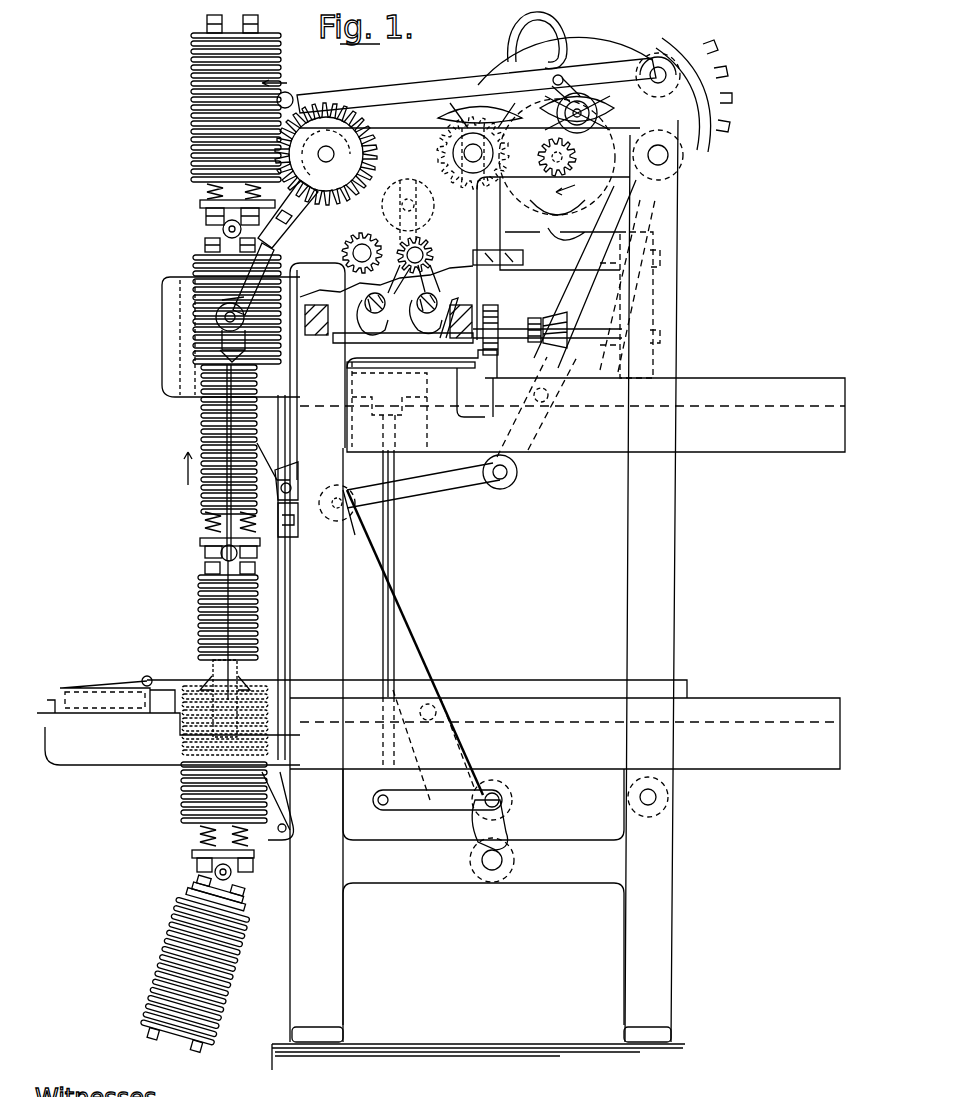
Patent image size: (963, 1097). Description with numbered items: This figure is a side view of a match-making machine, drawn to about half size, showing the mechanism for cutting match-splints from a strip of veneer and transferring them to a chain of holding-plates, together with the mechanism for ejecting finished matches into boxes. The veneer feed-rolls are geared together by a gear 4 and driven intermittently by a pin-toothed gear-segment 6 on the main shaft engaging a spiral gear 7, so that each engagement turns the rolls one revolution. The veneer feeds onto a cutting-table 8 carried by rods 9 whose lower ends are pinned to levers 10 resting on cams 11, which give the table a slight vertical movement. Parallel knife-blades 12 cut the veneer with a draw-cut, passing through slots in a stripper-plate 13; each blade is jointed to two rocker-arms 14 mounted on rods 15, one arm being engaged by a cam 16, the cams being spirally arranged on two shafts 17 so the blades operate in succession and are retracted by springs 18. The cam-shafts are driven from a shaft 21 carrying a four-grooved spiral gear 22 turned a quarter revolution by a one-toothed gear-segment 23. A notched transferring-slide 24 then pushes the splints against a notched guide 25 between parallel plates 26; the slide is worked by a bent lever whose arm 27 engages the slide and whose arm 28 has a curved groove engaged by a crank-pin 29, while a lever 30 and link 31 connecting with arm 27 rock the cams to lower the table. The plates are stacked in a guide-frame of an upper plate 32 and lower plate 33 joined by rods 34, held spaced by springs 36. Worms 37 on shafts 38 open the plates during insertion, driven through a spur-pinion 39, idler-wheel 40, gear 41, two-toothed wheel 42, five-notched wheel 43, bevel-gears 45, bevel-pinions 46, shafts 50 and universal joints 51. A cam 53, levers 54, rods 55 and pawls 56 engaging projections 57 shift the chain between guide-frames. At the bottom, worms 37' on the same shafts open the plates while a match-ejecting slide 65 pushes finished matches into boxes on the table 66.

The gear 4 is at (485, 305).
The gear-segment 6 is at (714, 118).
The spiral gear 7 is at (540, 325).
The cutting-table 8 is at (425, 385).
The rods 9 is at (395, 550).
The levers 10 is at (425, 805).
The cams 11 is at (500, 814).
The knife-blades 12 is at (352, 332).
The stripper-plate 13 is at (460, 368).
The rocker-arms 14 is at (419, 299).
The rods 15 is at (384, 306).
The cam 16 is at (399, 279).
The shafts 17 is at (413, 243).
The springs 18 is at (455, 305).
The shaft 21 is at (490, 265).
The spiral gear 22 is at (527, 304).
The gear-segment 23 is at (586, 98).
The transferring-slide 24 is at (623, 286).
The notched guide 25 is at (172, 323).
The parallel plates 26 is at (207, 497).
The lever-arm 27 is at (520, 468).
The lever-arm 28 is at (550, 34).
The crank-pin 29 is at (552, 82).
The lever 30 is at (418, 658).
The link 31 is at (437, 500).
The upper plate 32 is at (205, 247).
The lower plate 33 is at (210, 546).
The rods 34 is at (206, 523).
The springs 36 is at (250, 522).
The worms 37 is at (208, 346).
The worms 37' is at (214, 703).
The shafts 38 is at (210, 425).
The spur-pinion 39 is at (578, 160).
The idler-wheel 40 is at (460, 118).
The gear 41 is at (408, 209).
The wheel 42 is at (458, 153).
The notched wheel 43 is at (326, 148).
The bevel-gears 45 is at (373, 243).
The bevel-pinions 46 is at (283, 196).
The shafts 50 is at (253, 267).
The universal joints 51 is at (182, 300).
The cam 53 is at (606, 206).
The levers 54 is at (452, 82).
The rods 55 is at (286, 566).
The pawls 56 is at (276, 492).
The projections 57 is at (262, 910).
The match-ejecting slide 65 is at (559, 680).
The table 66 is at (49, 711).